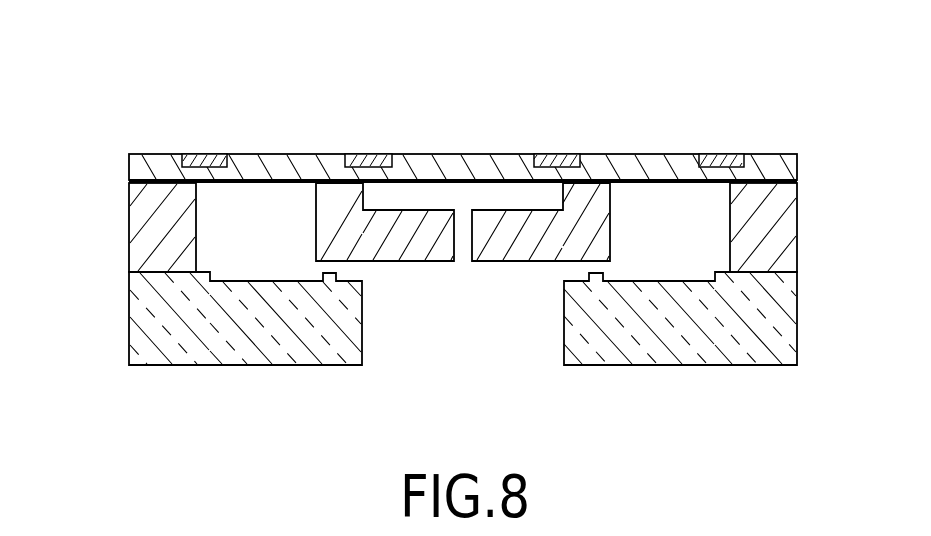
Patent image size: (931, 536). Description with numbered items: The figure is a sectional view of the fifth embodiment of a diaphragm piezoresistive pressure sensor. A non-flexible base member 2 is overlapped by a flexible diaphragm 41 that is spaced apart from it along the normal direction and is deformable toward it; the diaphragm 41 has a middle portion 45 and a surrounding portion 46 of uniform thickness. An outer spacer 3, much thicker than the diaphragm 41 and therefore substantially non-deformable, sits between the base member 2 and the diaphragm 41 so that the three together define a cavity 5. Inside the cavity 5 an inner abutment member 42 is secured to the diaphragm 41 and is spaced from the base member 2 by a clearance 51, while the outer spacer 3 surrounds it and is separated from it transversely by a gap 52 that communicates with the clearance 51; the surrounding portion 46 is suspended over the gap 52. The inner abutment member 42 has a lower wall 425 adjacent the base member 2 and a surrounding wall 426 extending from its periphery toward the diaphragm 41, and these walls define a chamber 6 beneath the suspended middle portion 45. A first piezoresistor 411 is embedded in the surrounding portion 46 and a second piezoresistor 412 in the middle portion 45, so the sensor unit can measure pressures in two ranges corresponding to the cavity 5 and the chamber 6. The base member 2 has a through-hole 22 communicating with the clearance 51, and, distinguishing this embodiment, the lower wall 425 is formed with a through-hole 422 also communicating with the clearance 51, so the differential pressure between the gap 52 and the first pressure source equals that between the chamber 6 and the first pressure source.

The base member 2 is at (692, 352).
The through-hole 22 is at (511, 343).
The outer spacer 3 is at (141, 223).
The cavity 5 is at (220, 240).
The flexible diaphragm 41 is at (640, 141).
The first piezoresistor 411 is at (201, 154).
The second piezoresistor 412 is at (368, 154).
The surrounding portion 46 is at (275, 154).
The middle portion 45 is at (452, 181).
The chamber 6 is at (427, 195).
The inner abutment member 42 is at (620, 222).
The through-hole 422 is at (467, 193).
The lower wall 425 is at (441, 262).
The surrounding wall 426 is at (314, 197).
The clearance 51 is at (357, 263).
The gap 52 is at (265, 230).